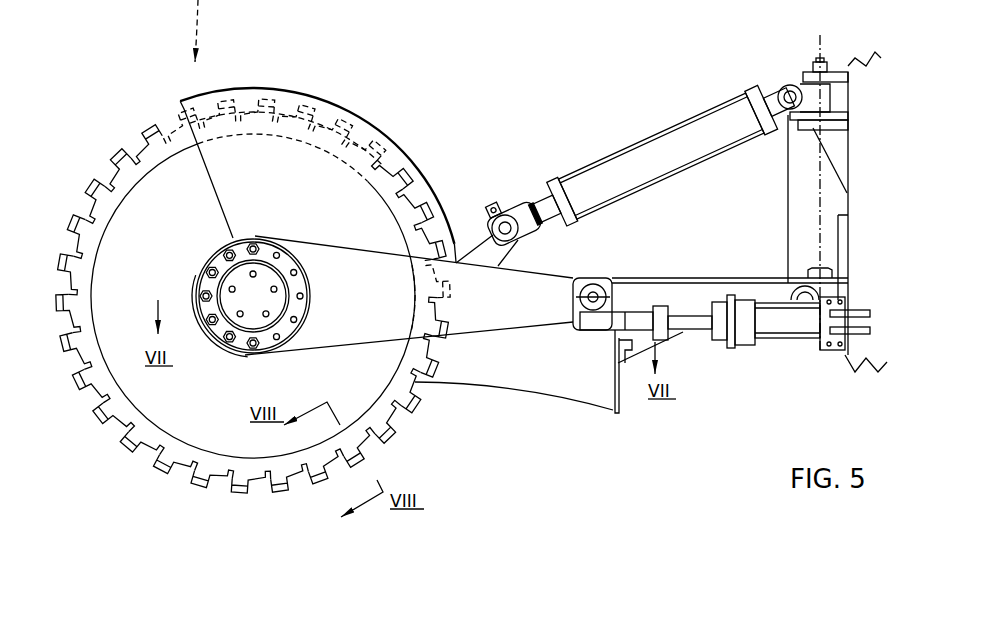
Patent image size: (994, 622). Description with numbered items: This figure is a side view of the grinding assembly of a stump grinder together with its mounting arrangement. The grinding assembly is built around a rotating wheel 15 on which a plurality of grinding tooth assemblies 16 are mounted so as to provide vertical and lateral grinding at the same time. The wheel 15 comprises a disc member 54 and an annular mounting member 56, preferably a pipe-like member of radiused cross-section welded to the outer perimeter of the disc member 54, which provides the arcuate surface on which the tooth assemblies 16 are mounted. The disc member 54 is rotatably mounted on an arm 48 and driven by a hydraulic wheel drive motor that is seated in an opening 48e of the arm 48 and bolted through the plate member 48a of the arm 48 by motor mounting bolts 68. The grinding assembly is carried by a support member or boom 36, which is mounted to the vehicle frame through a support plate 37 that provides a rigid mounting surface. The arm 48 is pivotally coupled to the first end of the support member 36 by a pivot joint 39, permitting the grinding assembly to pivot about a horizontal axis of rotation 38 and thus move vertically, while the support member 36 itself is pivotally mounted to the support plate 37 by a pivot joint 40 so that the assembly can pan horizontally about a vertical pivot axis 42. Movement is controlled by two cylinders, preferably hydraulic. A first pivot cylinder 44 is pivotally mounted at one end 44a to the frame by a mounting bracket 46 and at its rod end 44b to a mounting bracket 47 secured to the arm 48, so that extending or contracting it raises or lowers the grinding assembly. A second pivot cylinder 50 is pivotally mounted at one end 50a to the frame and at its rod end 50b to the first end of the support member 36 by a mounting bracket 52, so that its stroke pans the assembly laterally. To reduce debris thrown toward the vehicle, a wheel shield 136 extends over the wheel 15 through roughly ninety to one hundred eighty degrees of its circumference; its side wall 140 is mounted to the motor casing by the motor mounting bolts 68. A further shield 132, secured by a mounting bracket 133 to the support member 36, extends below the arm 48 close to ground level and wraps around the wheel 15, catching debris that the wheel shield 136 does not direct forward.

The wheel 15 is at (147, 108).
The grinding tooth assemblies 16 is at (107, 147).
The support member 36 is at (700, 278).
The support plate 37 is at (834, 235).
The horizontal axis of rotation 38 is at (578, 292).
The pivot joint 39 is at (604, 270).
The pivot joint 40 is at (802, 262).
The vertical pivot axis 42 is at (821, 47).
The first pivot cylinder 44 is at (618, 150).
The one end of first pivot cylinder 44a is at (782, 90).
The rod end of first pivot cylinder 44b is at (513, 207).
The mounting bracket 46 is at (808, 57).
The mounting bracket 47 is at (511, 248).
The arm 48 is at (368, 247).
The plate member 48a is at (357, 335).
The opening 48e is at (265, 272).
The second pivot cylinder 50 is at (580, 280).
The one end of second pivot cylinder 50a is at (832, 360).
The rod end of second pivot cylinder 50b is at (654, 334).
The mounting bracket 52 is at (625, 302).
The disc member 54 is at (130, 228).
The annular mounting member 56 is at (90, 358).
The motor mounting bolts 68 is at (253, 246).
The shield 132 is at (485, 368).
The mounting bracket 133 is at (630, 368).
The wheel shield 136 is at (263, 88).
The side wall 140 is at (325, 157).